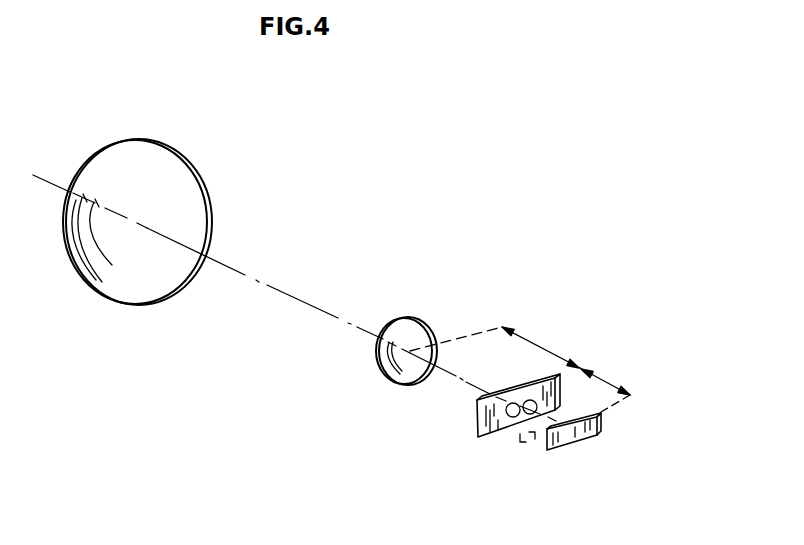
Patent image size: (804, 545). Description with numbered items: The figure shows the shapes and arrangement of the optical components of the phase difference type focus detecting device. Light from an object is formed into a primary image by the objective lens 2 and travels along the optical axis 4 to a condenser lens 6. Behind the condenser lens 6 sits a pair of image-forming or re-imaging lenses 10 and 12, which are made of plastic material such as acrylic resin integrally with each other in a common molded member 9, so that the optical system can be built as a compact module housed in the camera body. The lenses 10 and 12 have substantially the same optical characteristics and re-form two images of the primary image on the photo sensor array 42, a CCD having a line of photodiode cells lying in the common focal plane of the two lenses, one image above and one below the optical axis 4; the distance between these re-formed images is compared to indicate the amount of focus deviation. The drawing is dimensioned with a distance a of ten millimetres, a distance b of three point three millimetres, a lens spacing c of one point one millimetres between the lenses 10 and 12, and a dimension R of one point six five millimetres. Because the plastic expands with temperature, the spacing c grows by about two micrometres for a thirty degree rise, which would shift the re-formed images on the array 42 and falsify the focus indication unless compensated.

The objective lens 2 is at (119, 305).
The optical axis 4 is at (248, 276).
The condenser lens 6 is at (397, 383).
The aperture plate 9 is at (473, 422).
The image forming lens 10 is at (510, 402).
The image forming lens 12 is at (532, 400).
The photo sensor array 42 is at (587, 438).
The dimension a is at (535, 345).
The dimension b is at (607, 380).
The lens distance c is at (528, 442).
The dimension R is at (512, 418).